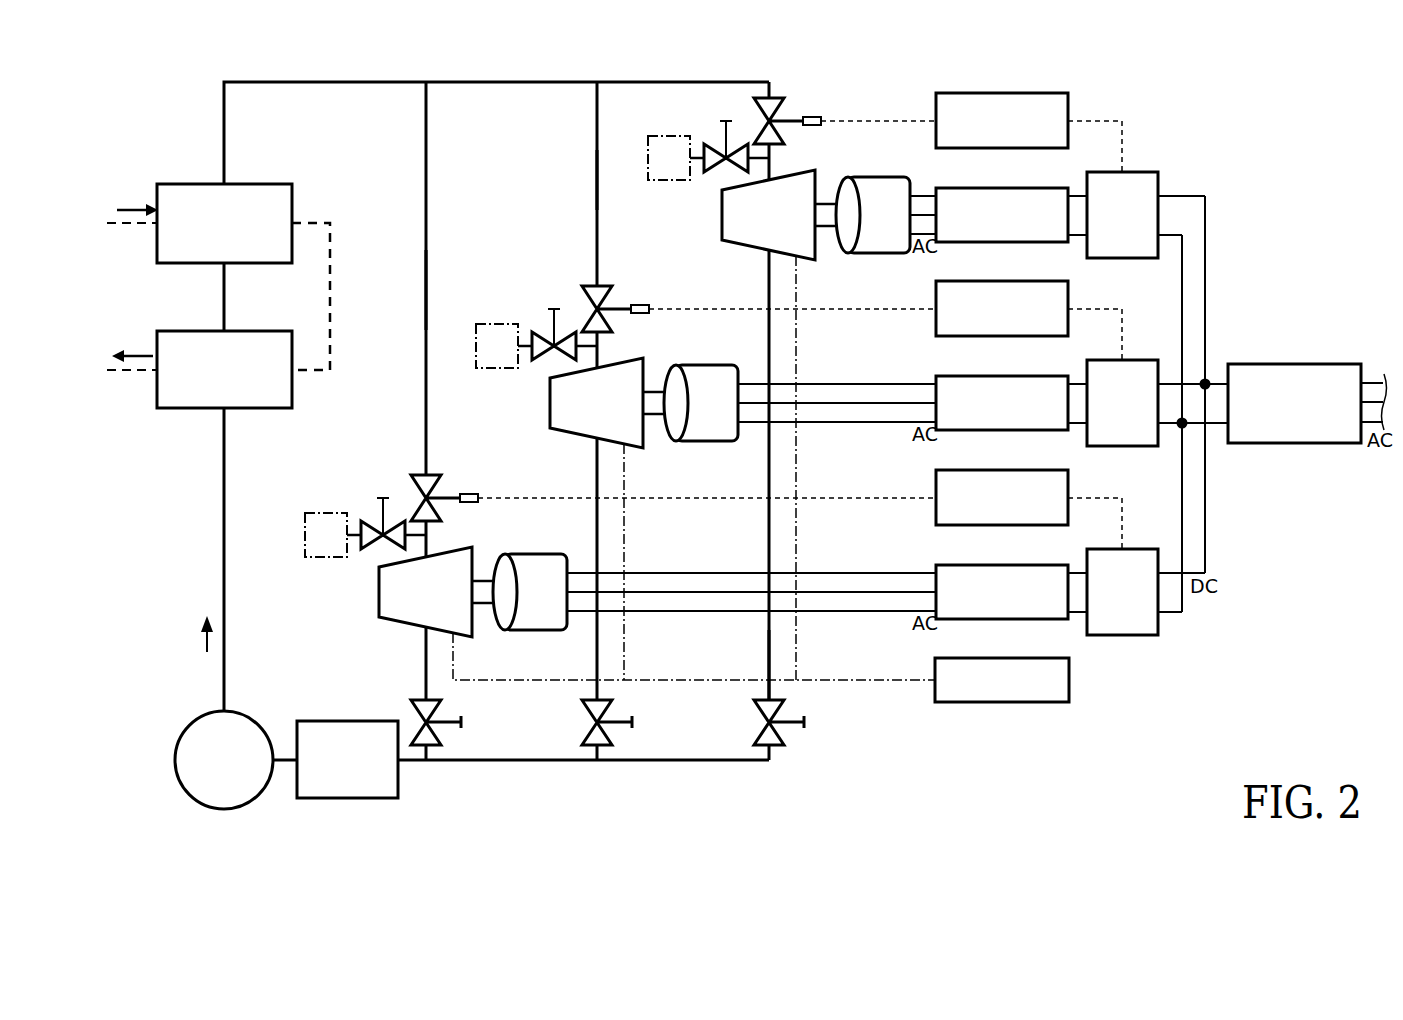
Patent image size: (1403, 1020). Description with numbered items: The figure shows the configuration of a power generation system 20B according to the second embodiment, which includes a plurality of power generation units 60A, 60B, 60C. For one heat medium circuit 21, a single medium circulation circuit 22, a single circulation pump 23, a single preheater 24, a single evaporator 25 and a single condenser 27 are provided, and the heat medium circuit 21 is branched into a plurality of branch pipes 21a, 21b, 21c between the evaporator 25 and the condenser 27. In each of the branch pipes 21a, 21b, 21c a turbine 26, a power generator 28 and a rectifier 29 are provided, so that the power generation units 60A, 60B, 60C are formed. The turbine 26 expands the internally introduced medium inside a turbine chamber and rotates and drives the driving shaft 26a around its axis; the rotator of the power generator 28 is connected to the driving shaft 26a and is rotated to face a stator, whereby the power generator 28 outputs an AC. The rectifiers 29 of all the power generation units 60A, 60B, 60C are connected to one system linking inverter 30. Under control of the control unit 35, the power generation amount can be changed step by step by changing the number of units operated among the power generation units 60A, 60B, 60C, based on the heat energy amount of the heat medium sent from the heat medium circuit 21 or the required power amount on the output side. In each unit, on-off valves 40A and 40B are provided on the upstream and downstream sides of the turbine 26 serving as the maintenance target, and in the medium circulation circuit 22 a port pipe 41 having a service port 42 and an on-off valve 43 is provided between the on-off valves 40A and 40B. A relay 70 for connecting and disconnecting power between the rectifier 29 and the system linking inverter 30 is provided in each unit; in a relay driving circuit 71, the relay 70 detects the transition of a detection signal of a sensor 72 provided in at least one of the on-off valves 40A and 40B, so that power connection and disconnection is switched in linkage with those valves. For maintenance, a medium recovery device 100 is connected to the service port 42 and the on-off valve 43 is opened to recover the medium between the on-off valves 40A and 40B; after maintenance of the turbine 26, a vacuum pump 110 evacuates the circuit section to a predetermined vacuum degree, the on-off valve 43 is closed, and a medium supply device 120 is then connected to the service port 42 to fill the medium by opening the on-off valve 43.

The power generation system 20B is at (1322, 138).
The heat medium circuit 21 is at (136, 225).
The branch pipe 21a is at (426, 290).
The branch pipe 21b is at (597, 178).
The branch pipe 21c is at (768, 655).
The medium circulation circuit 22 is at (313, 82).
The circulation pump 23 is at (252, 717).
The preheater 24 is at (273, 331).
The evaporator 25 is at (292, 189).
The turbine 26 is at (379, 612).
The driving shaft 26a is at (483, 585).
The condenser 27 is at (327, 800).
The power generator 28 is at (535, 555).
The rectifier 29 is at (1008, 565).
The system linking inverter 30 is at (1305, 364).
The control unit 35 is at (1069, 680).
The on-off valve 40A is at (411, 491).
The on-off valve 40B is at (411, 710).
The port pipe 41 is at (415, 539).
The service port 42 is at (354, 540).
The on-off valve 43 is at (377, 498).
The power generation unit 60A is at (431, 191).
The power generation unit 60B is at (602, 191).
The power generation unit 60C is at (775, 93).
The relay 70 is at (1142, 549).
The relay driving circuit 71 is at (1008, 469).
The sensor 72 is at (471, 494).
The medium recovery device 100 is at (318, 513).
The vacuum pump 110 is at (478, 346).
The medium supply device 120 is at (478, 346).